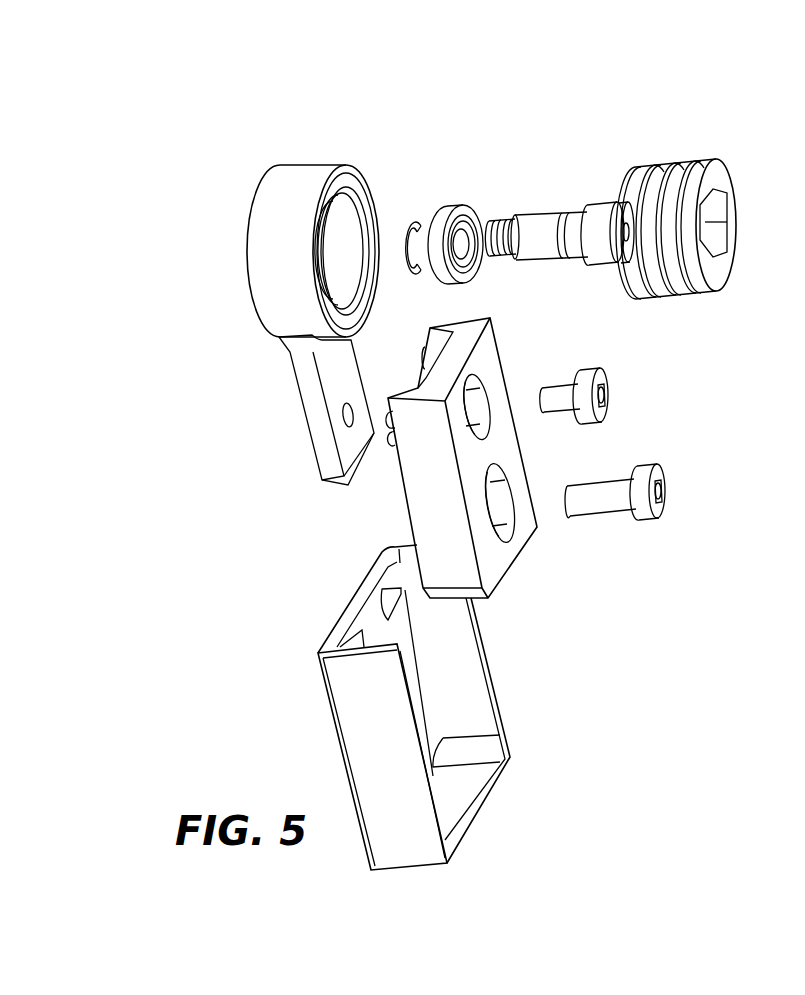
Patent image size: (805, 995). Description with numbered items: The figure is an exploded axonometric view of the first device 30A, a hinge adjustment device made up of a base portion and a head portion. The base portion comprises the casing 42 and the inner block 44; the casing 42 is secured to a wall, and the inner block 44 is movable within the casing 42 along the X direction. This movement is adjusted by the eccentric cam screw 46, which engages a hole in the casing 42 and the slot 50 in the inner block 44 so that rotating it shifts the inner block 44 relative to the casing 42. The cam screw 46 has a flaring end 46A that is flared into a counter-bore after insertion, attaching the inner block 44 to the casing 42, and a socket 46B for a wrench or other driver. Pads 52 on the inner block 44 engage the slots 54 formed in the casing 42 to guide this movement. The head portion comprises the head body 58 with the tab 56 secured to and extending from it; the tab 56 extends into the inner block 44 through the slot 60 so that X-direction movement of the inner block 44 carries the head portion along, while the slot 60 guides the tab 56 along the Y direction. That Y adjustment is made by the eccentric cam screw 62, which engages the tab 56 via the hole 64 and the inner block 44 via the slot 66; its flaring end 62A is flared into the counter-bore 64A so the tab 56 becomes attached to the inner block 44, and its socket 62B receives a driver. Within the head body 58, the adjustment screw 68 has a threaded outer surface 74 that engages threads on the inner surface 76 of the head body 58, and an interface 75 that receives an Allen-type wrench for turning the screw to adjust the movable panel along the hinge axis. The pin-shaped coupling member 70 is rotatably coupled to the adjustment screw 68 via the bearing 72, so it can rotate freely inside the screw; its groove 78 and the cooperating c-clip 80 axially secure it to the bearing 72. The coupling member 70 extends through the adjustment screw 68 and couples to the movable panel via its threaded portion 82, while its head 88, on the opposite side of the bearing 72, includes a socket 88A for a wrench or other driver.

The first device 30A is at (594, 97).
The casing 42 is at (492, 783).
The inner block 44 is at (516, 474).
The cam screw 46 is at (663, 478).
The flaring end 46A is at (572, 510).
The socket 46B is at (667, 502).
The slot 50 is at (505, 527).
The pads 52 is at (388, 453).
The slots 54 is at (352, 643).
The tab 56 is at (308, 390).
The head body 58 is at (268, 225).
The slot 60 is at (430, 382).
The cam screw 62 is at (600, 380).
The flaring end 62A is at (541, 410).
The socket 62B is at (610, 400).
The hole 64 is at (285, 435).
The counter-bore 64A is at (348, 418).
The slot 66 is at (492, 388).
The adjustment screw 68 is at (715, 183).
The coupling member 70 is at (548, 258).
The bearing 72 is at (440, 212).
The outer surface 74 is at (700, 296).
The interface 75 is at (717, 220).
The inner surface 76 is at (347, 207).
The groove 78 is at (567, 213).
The c-clip 80 is at (412, 273).
The threaded portion 82 is at (494, 221).
The head 88 is at (603, 265).
The socket 88A is at (623, 200).